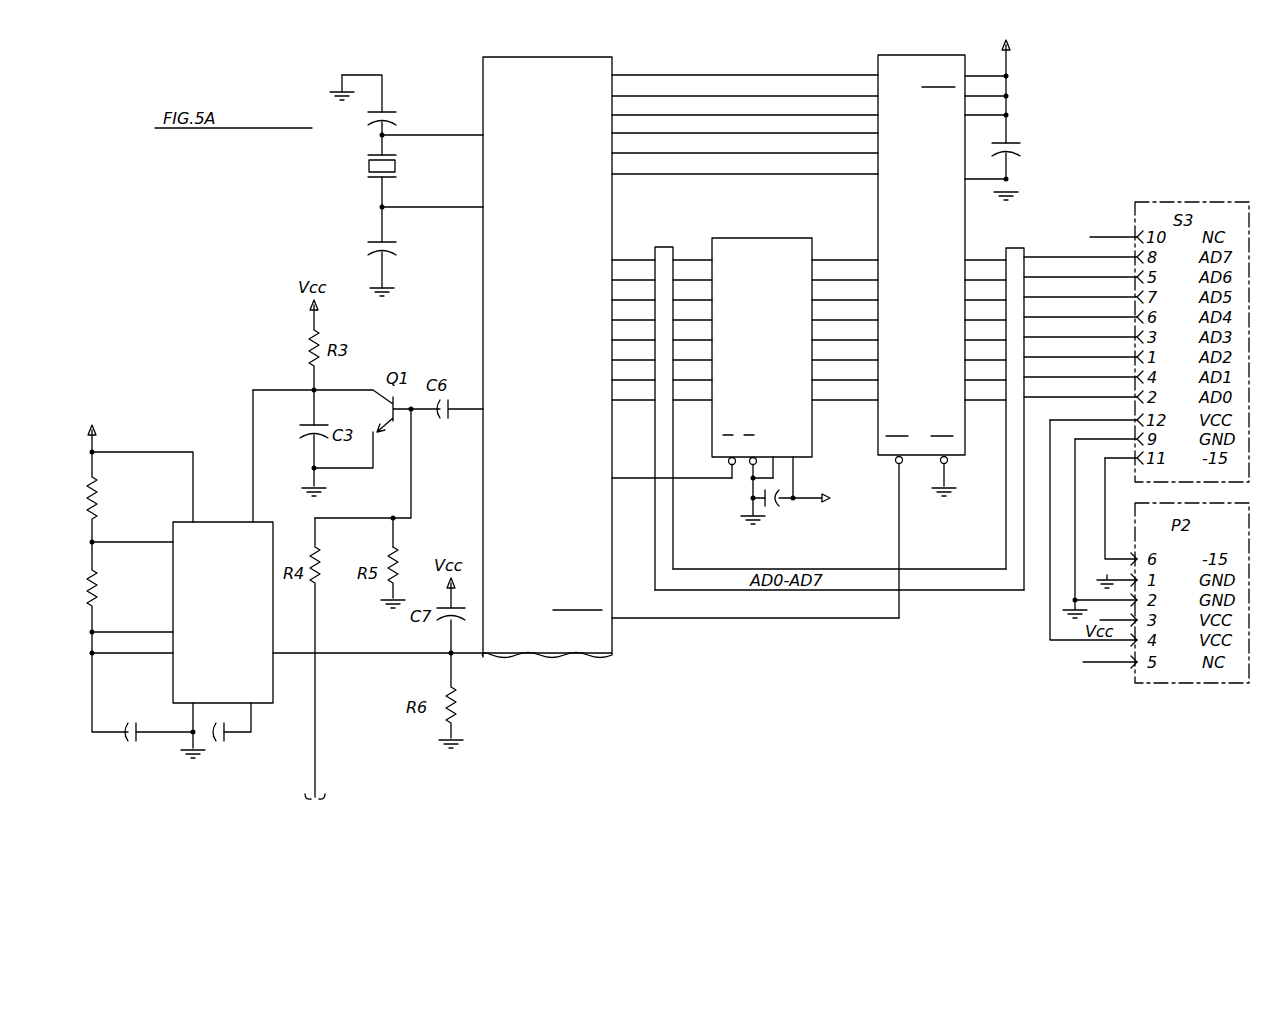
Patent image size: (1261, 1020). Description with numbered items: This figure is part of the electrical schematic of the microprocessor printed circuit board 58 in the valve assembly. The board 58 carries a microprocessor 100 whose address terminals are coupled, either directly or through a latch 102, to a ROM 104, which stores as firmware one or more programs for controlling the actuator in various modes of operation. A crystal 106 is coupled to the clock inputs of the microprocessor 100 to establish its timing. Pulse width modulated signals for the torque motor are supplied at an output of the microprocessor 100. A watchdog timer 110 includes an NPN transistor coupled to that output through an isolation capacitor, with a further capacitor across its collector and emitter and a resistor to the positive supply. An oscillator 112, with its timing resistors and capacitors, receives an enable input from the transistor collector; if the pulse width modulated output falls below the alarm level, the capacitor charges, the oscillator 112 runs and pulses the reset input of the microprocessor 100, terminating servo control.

The microprocessor printed circuit board 58 is at (747, 62).
The microprocessor 100 is at (550, 64).
The latch 102 is at (763, 244).
The ROM 104 is at (915, 62).
The crystal 106 is at (368, 165).
The watchdog timer 110 is at (145, 385).
The oscillator 112 is at (214, 528).